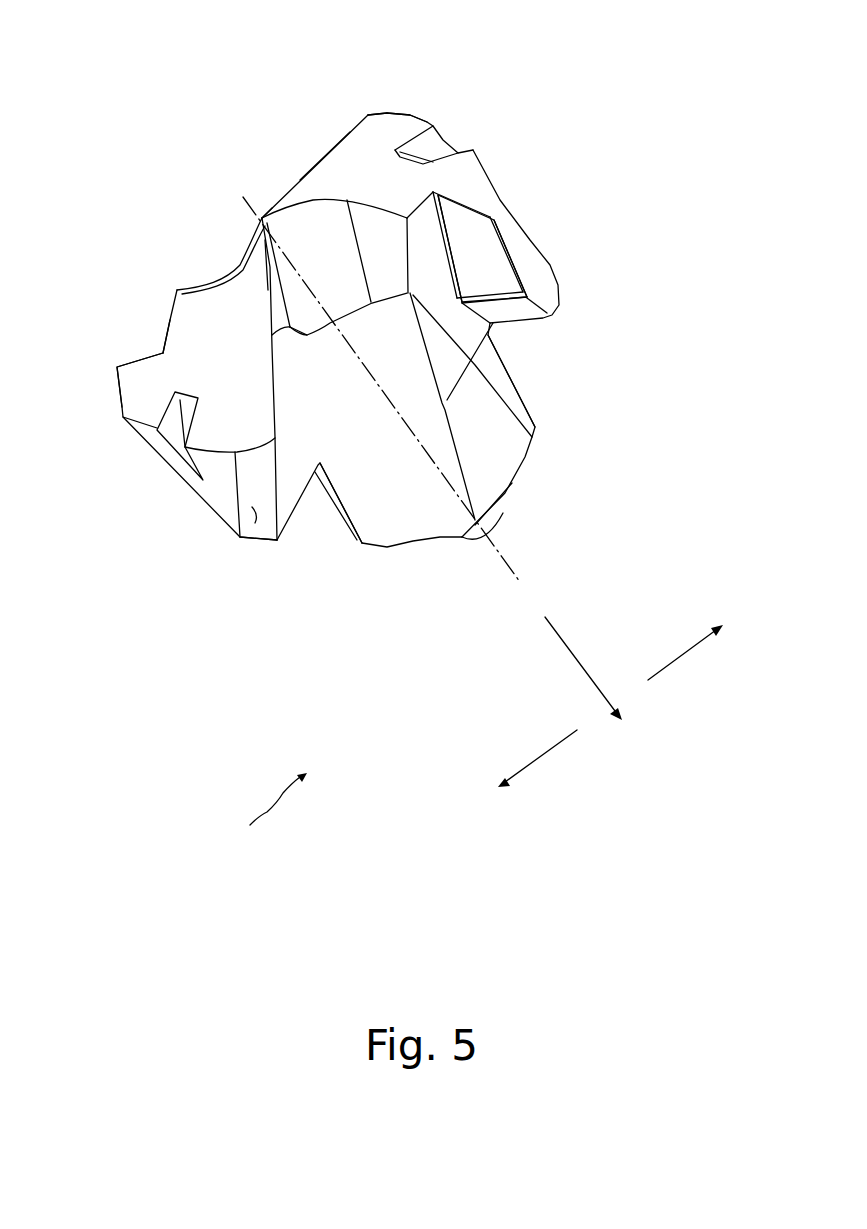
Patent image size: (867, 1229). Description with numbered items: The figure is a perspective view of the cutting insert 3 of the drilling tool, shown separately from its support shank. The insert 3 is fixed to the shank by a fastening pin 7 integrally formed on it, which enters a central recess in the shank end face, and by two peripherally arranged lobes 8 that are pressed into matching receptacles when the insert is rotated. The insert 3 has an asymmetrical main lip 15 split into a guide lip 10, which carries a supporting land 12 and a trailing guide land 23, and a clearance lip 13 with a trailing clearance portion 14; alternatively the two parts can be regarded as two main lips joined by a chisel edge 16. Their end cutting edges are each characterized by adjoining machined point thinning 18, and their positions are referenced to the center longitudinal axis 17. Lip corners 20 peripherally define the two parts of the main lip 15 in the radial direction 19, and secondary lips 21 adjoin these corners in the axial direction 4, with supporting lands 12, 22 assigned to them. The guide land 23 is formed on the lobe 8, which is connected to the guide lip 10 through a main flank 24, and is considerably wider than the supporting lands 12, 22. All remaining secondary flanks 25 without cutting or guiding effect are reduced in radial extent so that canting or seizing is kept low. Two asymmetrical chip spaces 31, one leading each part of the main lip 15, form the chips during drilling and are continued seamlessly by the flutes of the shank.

The cutting insert 3 is at (274, 813).
The axial direction 4 is at (573, 653).
The fastening pin 7 is at (524, 442).
The lobe 8 is at (133, 409).
The guide lip 10 is at (278, 355).
The supporting land 12 is at (247, 540).
The clearance lip 13 is at (330, 153).
The clearance portion 14 is at (418, 106).
The main lip 15 is at (256, 267).
The chisel edge 16 is at (264, 216).
The center longitudinal axis 17 is at (513, 570).
The point thinning 18 is at (312, 265).
The radial direction 19 is at (670, 667).
The lip corner 20 is at (273, 437).
The secondary lip 21 is at (278, 508).
The supporting land 22 is at (370, 115).
The guide land 23 is at (117, 370).
The main flank 24 is at (211, 328).
The secondary flank 25 is at (443, 133).
The chip space 31 is at (363, 468).